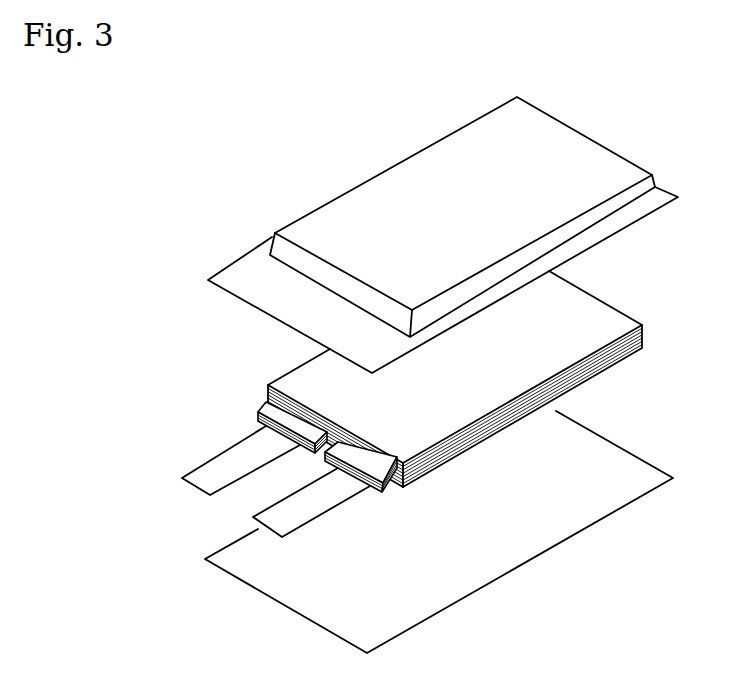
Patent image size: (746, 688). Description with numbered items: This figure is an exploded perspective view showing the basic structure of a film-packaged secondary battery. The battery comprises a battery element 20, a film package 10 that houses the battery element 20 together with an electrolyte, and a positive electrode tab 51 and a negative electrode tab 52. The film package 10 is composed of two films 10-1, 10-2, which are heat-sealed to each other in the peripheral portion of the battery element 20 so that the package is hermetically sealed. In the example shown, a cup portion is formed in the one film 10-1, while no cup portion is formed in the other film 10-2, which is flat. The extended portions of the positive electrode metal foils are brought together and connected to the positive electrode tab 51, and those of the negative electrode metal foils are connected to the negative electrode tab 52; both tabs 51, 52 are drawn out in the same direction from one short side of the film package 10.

The film package 10 is at (454, 227).
The film 10-1 is at (630, 168).
The film 10-2 is at (630, 503).
The battery element 20 is at (608, 300).
The positive electrode tab 51 is at (198, 469).
The negative electrode tab 52 is at (253, 517).